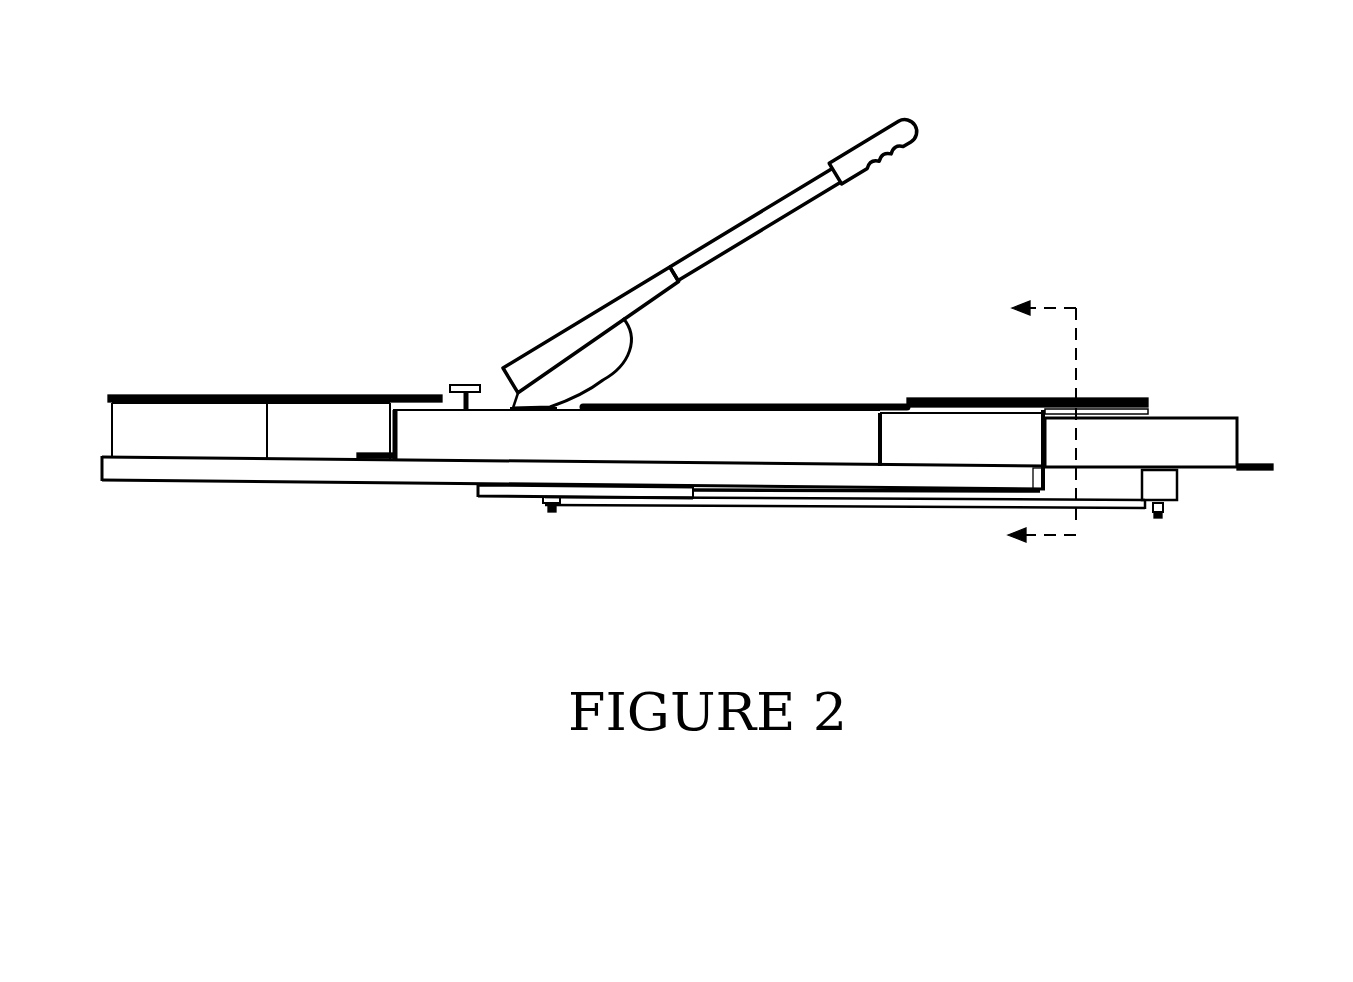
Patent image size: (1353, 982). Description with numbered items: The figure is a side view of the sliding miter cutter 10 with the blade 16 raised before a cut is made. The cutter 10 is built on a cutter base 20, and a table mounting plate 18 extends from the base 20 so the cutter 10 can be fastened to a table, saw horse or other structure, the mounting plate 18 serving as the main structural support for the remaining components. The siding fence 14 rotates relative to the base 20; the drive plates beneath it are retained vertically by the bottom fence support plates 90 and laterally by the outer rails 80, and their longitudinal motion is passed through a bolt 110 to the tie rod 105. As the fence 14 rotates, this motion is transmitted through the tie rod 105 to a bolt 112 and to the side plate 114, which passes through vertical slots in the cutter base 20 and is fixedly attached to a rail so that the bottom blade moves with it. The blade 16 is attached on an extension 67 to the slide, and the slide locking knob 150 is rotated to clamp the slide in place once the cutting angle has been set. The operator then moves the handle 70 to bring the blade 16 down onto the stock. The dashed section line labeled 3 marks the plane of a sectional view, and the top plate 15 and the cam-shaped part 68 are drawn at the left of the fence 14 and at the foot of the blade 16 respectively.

The sliding miter cutter 10 is at (1012, 158).
The siding fence 14 is at (110, 437).
The top plate 15 is at (140, 393).
The blade 16 is at (582, 330).
The table mounting plate 18 is at (1270, 461).
The cutter base 20 is at (1177, 432).
The extension 67 is at (510, 407).
The cam 68 is at (630, 338).
The handle 70 is at (743, 222).
The outer rails 80 is at (492, 496).
The bottom fence support plates 90 is at (505, 496).
The tie rod 105 is at (767, 508).
The bolt 110 is at (555, 512).
The bolt 112 is at (1160, 517).
The side plate 114 is at (1167, 477).
The slide locking knob 150 is at (457, 385).
The section line 3- 3 is at (1042, 434).